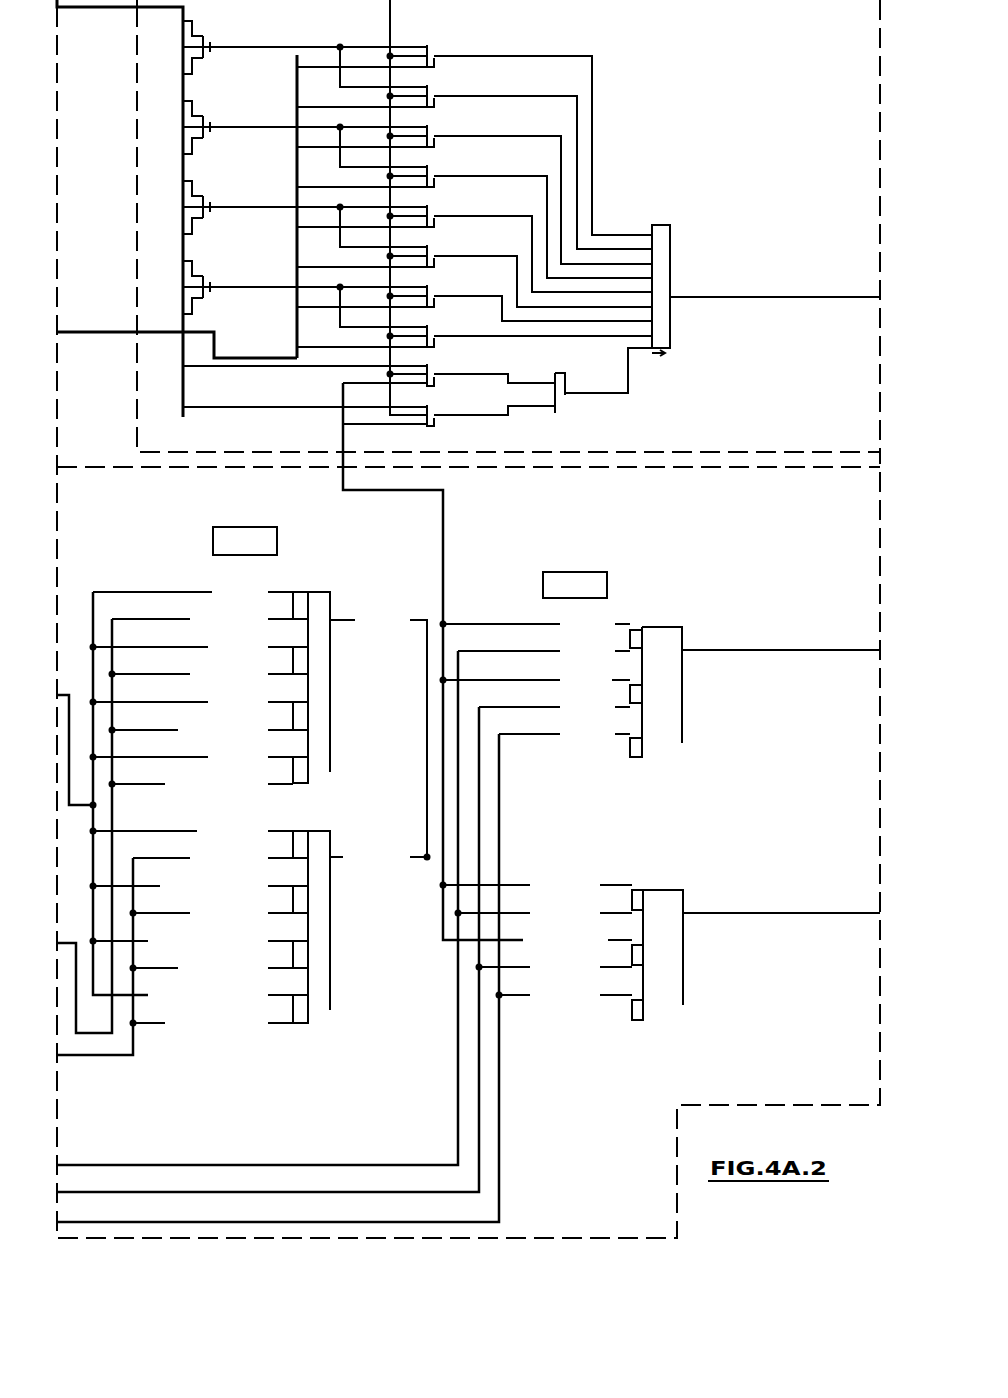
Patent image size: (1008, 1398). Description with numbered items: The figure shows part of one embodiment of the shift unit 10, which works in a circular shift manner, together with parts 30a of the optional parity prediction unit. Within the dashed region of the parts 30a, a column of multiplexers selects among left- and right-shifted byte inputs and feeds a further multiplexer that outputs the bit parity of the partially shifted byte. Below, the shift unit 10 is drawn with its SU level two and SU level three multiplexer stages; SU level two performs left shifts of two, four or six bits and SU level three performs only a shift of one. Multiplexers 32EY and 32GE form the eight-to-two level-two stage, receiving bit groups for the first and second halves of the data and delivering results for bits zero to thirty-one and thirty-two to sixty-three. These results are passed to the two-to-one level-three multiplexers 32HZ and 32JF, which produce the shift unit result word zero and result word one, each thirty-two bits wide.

The parts of the parity prediction unit 30a is at (789, 48).
The shift unit 10 is at (792, 521).
The SU level 2 multiplexer for bits 0-31 32EY is at (308, 783).
The SU level 2 multiplexer for bits 32-63 32GE is at (308, 1023).
The SU level 3 multiplexer for result word 0 32HZ is at (642, 757).
The SU level 3 multiplexer for result word 1 32JF is at (643, 1020).